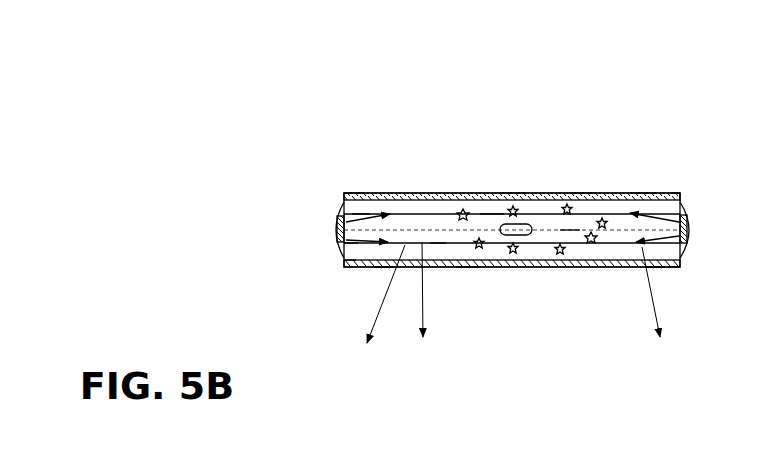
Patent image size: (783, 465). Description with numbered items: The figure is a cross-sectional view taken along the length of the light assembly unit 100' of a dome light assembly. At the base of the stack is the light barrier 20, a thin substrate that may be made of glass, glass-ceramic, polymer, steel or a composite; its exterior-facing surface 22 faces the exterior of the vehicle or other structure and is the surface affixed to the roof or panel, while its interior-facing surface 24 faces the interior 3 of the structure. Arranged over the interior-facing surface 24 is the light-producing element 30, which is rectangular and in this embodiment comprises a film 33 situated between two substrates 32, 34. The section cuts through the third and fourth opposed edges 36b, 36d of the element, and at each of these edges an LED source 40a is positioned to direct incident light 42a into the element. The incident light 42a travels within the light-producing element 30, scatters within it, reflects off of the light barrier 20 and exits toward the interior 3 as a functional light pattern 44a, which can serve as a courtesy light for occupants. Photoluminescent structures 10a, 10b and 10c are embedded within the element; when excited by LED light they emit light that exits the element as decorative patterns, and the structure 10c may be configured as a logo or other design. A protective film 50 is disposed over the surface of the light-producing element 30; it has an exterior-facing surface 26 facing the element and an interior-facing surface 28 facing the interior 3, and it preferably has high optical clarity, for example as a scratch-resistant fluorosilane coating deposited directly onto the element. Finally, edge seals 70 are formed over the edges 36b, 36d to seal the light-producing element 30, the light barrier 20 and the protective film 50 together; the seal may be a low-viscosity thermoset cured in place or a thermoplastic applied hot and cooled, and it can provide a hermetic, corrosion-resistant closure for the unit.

The light assembly unit 100' is at (512, 143).
The LED source 40a is at (337, 217).
The third edge 36b is at (343, 196).
The substrate 32 is at (357, 205).
The incident light 42a is at (360, 216).
The exterior-facing surface 26 is at (437, 245).
The photoluminescent structure 10a is at (464, 209).
The exterior-facing surface 22 is at (513, 191).
The photoluminescent structure 10c is at (530, 223).
The light-producing element 30 is at (584, 196).
The light barrier 20 is at (643, 193).
The fourth edge 36d is at (688, 203).
The substrate 34 is at (355, 246).
The edge seal 70 is at (343, 257).
The functional light pattern 44a is at (383, 282).
The interior-facing surface 28 is at (468, 267).
The interior-facing surface 24 is at (492, 205).
The interior 3 is at (527, 316).
The film 33 is at (571, 232).
The photoluminescent structure 10b is at (592, 244).
The protective film 50 is at (682, 262).